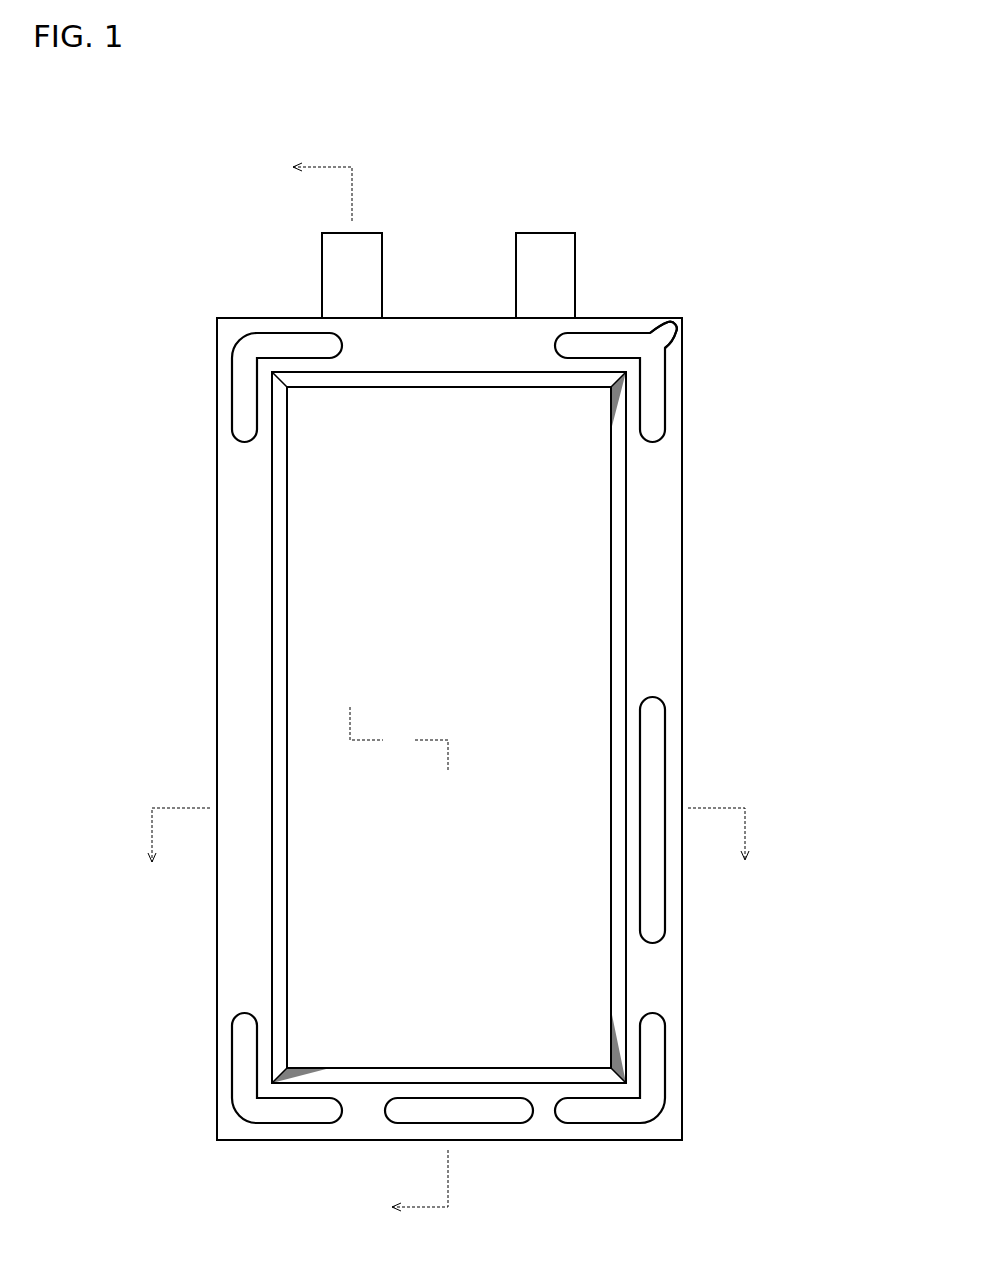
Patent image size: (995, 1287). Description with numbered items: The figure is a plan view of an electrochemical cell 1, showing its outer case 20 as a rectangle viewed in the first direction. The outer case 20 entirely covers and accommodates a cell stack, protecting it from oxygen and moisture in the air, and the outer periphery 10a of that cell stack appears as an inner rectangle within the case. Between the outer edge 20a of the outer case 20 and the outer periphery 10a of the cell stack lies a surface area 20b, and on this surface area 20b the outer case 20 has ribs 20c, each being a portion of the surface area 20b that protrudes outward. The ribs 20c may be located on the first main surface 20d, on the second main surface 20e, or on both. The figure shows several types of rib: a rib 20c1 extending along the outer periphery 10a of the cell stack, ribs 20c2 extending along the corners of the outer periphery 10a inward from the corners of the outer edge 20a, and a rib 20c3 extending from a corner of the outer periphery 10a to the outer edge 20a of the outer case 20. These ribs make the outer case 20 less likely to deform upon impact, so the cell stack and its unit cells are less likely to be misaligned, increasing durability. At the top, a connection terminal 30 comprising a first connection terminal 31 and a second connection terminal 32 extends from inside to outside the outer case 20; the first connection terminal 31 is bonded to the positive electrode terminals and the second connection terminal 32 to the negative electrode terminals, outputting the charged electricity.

The electrochemical cell 1 is at (683, 190).
The outer periphery of the cell stack 10a is at (600, 518).
The outer case 20 is at (348, 608).
The outer edge of the outer case 20a is at (665, 600).
The surface area 20b is at (665, 552).
The rib 20c is at (243, 407).
The rib extending along the outer periphery 20c1 is at (653, 770).
The rib extending along the corner of the outer periphery 20c2 is at (292, 347).
The rib extending from the corner to the outer edge 20c3 is at (672, 335).
The first main surface 20d is at (510, 528).
The second main surface 20e is at (540, 613).
The connection terminal 30 is at (400, 190).
The first connection terminal 31 is at (352, 270).
The second connection terminal 32 is at (540, 270).